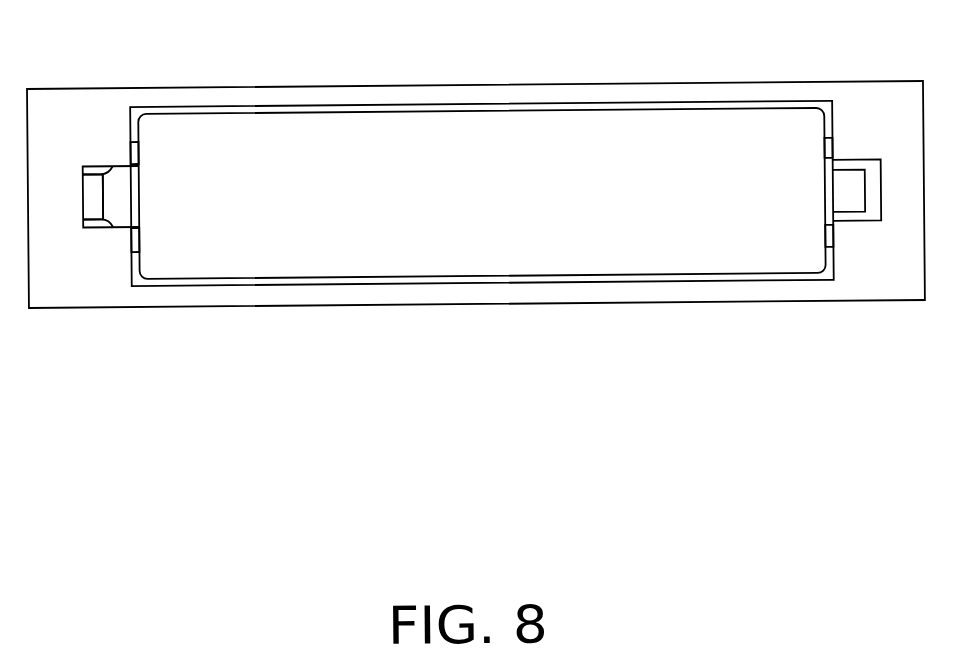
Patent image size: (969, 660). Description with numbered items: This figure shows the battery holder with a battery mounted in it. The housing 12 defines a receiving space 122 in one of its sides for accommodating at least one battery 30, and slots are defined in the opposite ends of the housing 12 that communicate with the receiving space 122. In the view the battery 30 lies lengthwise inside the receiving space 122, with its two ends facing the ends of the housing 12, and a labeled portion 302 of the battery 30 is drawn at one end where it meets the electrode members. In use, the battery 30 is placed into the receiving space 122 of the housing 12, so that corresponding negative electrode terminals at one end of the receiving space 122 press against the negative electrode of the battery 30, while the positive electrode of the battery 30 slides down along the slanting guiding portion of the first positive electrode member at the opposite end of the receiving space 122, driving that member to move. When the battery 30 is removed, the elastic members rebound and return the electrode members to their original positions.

The housing 12 is at (716, 92).
The receiving space 122 is at (240, 110).
The battery 30 is at (392, 149).
The inner portion of tab 302 is at (120, 213).